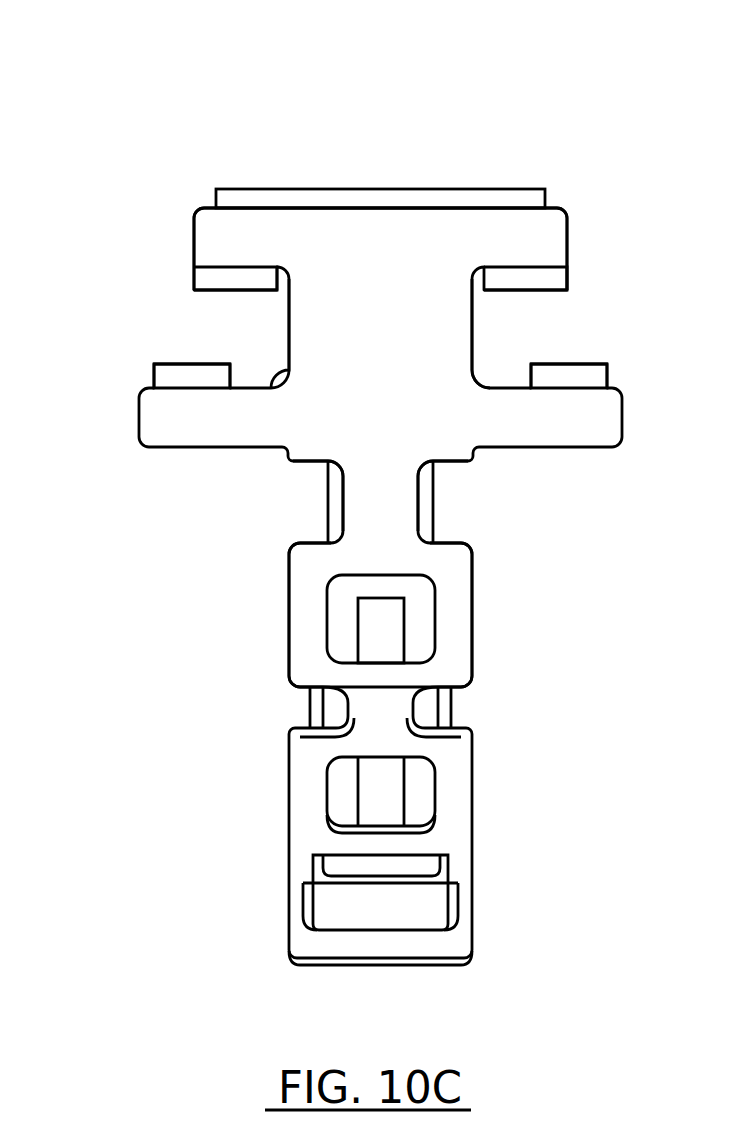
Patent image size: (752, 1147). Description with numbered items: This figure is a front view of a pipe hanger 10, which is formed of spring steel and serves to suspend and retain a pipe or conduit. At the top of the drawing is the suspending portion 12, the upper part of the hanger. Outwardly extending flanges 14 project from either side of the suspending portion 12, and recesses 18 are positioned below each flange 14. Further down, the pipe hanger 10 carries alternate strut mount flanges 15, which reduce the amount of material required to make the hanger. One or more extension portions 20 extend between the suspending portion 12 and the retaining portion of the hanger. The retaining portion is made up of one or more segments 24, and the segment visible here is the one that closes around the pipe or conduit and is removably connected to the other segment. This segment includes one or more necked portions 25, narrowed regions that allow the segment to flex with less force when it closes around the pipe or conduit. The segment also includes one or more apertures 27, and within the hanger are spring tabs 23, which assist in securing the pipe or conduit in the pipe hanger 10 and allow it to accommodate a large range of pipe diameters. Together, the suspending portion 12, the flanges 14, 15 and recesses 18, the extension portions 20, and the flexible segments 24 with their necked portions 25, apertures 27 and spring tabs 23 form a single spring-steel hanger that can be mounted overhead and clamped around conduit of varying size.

The pipe hanger 10 is at (613, 91).
The suspending portion 12 is at (370, 188).
The outwardly extending flanges 14 is at (215, 225).
The alternate strut mount flanges 15 is at (207, 295).
The recesses 18 is at (212, 330).
The extension portions 20 is at (363, 348).
The spring tabs 23 is at (385, 625).
The segments 24 is at (473, 568).
The necked portions 25 is at (343, 512).
The apertures 27 is at (345, 612).